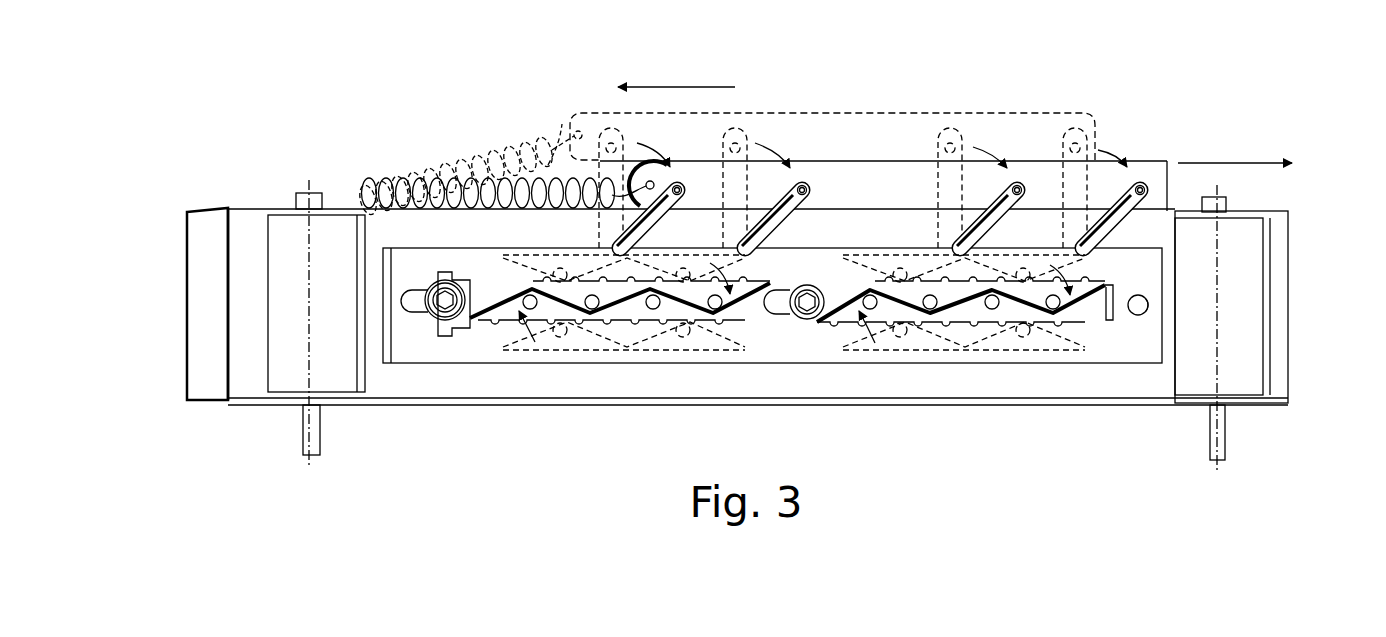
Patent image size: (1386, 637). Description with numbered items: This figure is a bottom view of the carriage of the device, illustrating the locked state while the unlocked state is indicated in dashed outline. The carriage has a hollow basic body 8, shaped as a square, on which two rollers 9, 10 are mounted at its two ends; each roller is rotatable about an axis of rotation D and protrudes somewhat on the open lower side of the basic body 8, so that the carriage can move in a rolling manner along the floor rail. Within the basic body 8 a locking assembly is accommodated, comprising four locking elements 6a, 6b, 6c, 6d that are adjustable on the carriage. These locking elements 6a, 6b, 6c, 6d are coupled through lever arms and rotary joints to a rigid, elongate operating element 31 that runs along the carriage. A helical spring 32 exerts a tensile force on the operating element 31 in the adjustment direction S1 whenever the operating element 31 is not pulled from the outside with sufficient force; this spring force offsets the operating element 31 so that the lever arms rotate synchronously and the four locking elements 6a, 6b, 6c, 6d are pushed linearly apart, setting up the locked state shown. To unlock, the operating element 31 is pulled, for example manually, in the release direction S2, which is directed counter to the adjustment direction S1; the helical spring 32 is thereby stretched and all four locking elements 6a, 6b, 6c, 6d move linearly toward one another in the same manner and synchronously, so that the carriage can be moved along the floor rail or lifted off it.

The basic body 8 is at (208, 208).
The roller 9 is at (1253, 362).
The roller 10 is at (295, 372).
The operating element 31 is at (842, 183).
The helical spring 32 is at (512, 158).
The locking element 6a is at (547, 263).
The locking element 6b is at (545, 347).
The locking element 6c is at (1042, 268).
The locking element 6d is at (1043, 347).
The axis of rotation D is at (305, 275).
The adjustment direction S1 is at (680, 86).
The release direction S2 is at (1237, 163).